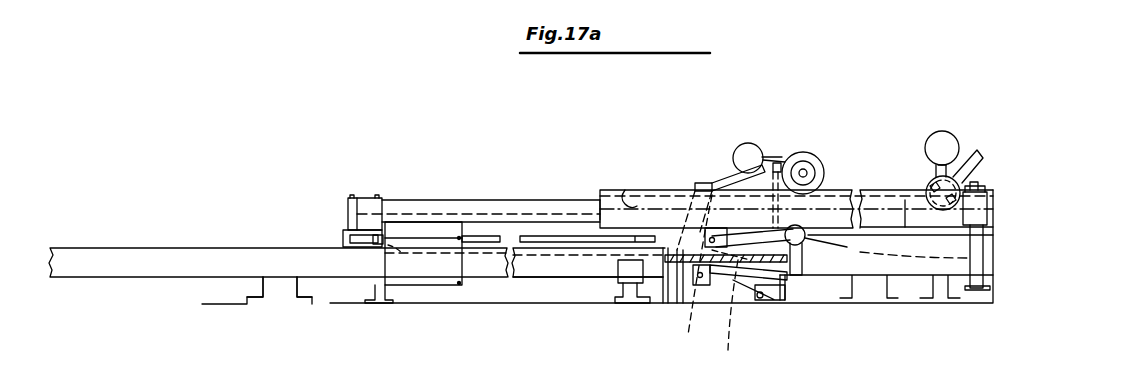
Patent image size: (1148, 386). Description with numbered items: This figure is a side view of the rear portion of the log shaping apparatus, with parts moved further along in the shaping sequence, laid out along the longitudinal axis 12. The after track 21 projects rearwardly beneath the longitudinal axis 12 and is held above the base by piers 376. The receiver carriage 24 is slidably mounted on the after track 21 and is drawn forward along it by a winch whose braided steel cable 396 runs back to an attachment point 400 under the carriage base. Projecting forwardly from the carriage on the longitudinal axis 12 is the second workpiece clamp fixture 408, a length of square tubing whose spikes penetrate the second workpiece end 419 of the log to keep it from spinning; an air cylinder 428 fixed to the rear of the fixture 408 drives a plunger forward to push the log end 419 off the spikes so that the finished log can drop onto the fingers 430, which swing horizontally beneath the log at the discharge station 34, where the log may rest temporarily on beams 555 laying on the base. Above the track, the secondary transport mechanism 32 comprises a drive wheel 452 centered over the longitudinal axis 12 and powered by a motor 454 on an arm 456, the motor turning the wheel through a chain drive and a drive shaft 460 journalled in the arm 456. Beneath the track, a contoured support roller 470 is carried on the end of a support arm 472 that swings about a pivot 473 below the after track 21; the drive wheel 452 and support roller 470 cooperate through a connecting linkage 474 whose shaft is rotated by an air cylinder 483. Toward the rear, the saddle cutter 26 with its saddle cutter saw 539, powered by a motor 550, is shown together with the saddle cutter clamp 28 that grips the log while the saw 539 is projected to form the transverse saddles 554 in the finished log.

The longitudinal axis 12 is at (905, 200).
The after track 21 is at (251, 247).
The receiver carriage 24 is at (438, 195).
The saddle cutter 26 is at (924, 138).
The saddle cutter clamp 28 is at (960, 238).
The secondary transport mechanism 32 is at (792, 148).
The discharge station 34 is at (508, 285).
The piers 376 is at (278, 297).
The braided steel cable 396 is at (843, 245).
The attachment point 400 is at (378, 246).
The second workpiece clamp fixture 408 is at (586, 198).
The second workpiece end 419 is at (598, 200).
The air cylinder 428 is at (351, 196).
The fingers 430 is at (562, 237).
The drive wheel 452 is at (819, 157).
The motor 454 is at (754, 147).
The arm 456 is at (718, 175).
The drive shaft 460 is at (702, 187).
The contoured support roller 470 is at (820, 228).
The support arm 472 is at (740, 271).
The pivot 473 is at (698, 278).
The connecting linkage 474 is at (762, 300).
The air cylinder 483 is at (696, 274).
The saddle cutter saw 539 is at (926, 185).
The motor 550 is at (968, 106).
The transverse saddles 554 is at (655, 200).
The beams 555 is at (378, 285).